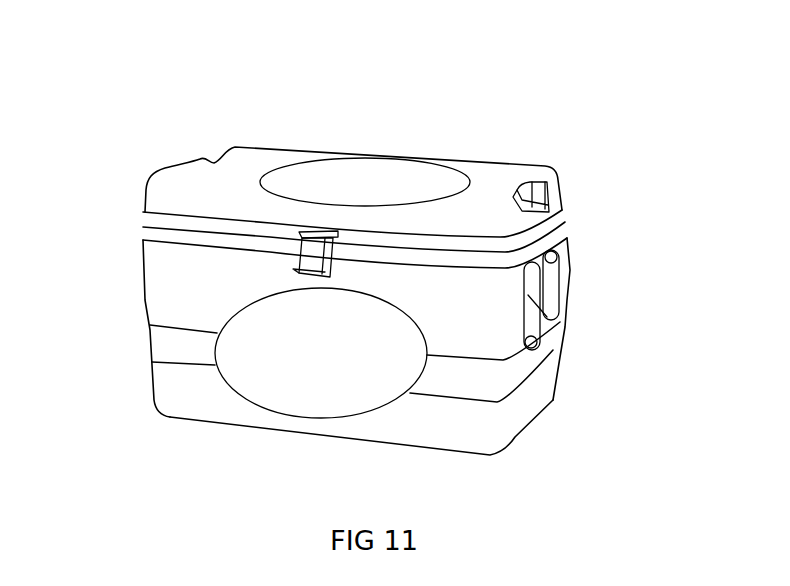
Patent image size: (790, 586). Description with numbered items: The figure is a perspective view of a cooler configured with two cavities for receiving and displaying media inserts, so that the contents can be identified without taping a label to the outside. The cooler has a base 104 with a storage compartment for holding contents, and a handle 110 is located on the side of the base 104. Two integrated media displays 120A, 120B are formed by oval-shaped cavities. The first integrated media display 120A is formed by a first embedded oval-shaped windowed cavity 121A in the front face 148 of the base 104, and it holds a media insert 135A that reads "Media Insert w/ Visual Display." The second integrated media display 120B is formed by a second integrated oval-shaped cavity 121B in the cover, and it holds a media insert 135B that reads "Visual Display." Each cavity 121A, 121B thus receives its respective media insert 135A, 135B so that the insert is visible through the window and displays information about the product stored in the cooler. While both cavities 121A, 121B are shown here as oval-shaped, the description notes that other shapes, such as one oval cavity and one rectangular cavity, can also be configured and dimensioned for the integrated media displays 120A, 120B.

The base 104 is at (508, 414).
The handle 110 is at (558, 320).
The integrated media display 120A is at (366, 411).
The integrated media display 120B is at (262, 148).
The oval-shaped windowed cavity 121A is at (232, 360).
The oval-shaped cavity 121B is at (455, 168).
The media insert 135A is at (287, 360).
The media insert 135B is at (368, 172).
The front face 148 is at (178, 290).